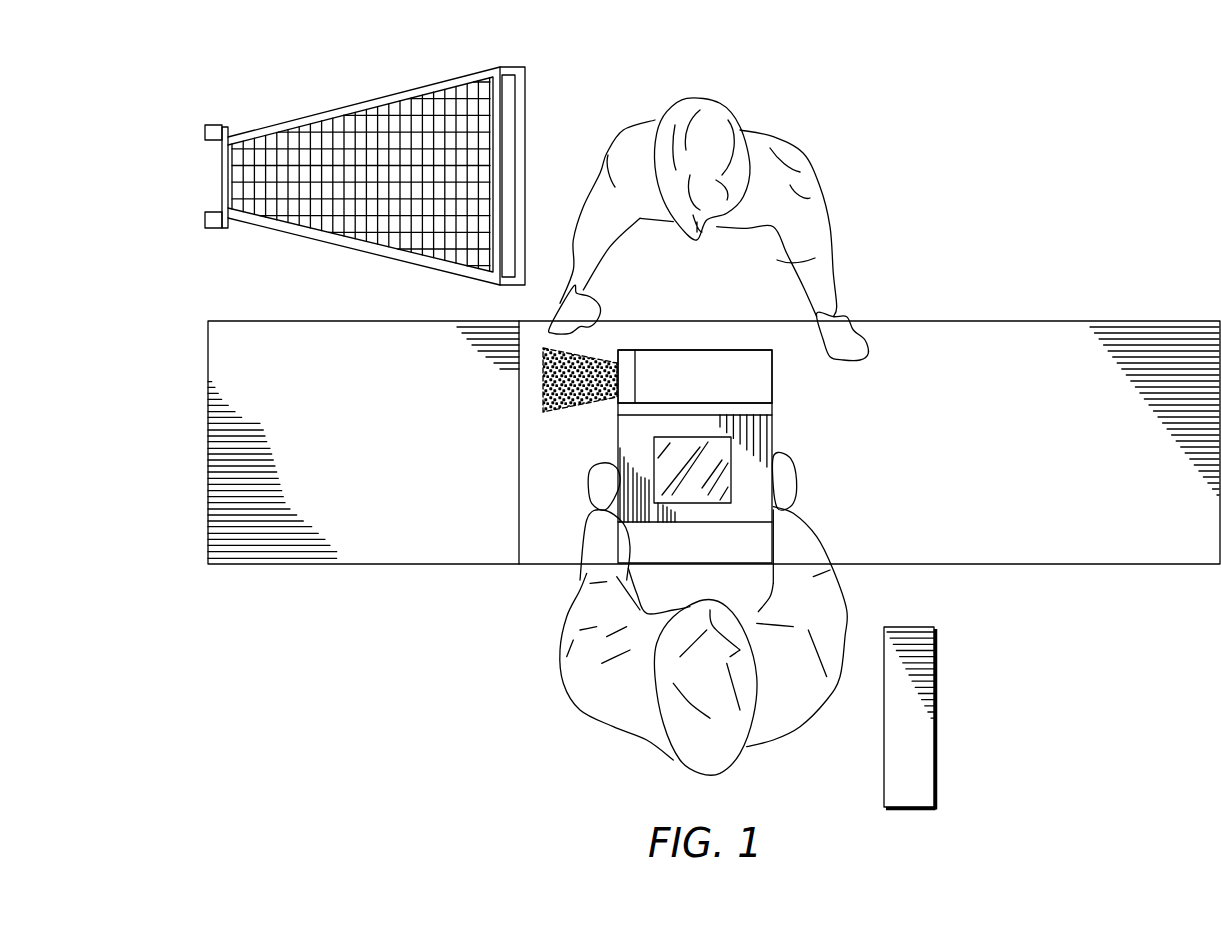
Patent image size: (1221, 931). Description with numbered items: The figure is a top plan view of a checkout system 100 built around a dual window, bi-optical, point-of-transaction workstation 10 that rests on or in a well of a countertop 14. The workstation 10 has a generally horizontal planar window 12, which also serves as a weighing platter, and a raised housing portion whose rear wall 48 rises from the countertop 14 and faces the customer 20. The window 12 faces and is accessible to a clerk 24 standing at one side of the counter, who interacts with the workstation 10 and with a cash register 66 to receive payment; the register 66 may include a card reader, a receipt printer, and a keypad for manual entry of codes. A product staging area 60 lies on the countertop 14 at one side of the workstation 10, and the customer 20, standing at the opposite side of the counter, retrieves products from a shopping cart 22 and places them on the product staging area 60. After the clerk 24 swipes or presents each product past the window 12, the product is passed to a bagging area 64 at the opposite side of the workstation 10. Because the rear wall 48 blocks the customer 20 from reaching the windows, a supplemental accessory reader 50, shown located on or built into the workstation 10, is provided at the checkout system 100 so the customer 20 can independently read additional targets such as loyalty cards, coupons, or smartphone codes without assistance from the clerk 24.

The checkout system 100 is at (860, 162).
The bi-optical point-of-transaction workstation 10 is at (693, 344).
The generally horizontal planar window 12 is at (688, 490).
The countertop 14 is at (1017, 320).
The customer 20 is at (705, 112).
The shopping cart 22 is at (310, 227).
The clerk 24 is at (683, 768).
The rear wall 48 is at (758, 347).
The accessory reader 50 is at (627, 395).
The product staging area 60 is at (1031, 510).
The bagging area 64 is at (232, 458).
The cash register 66 is at (908, 627).